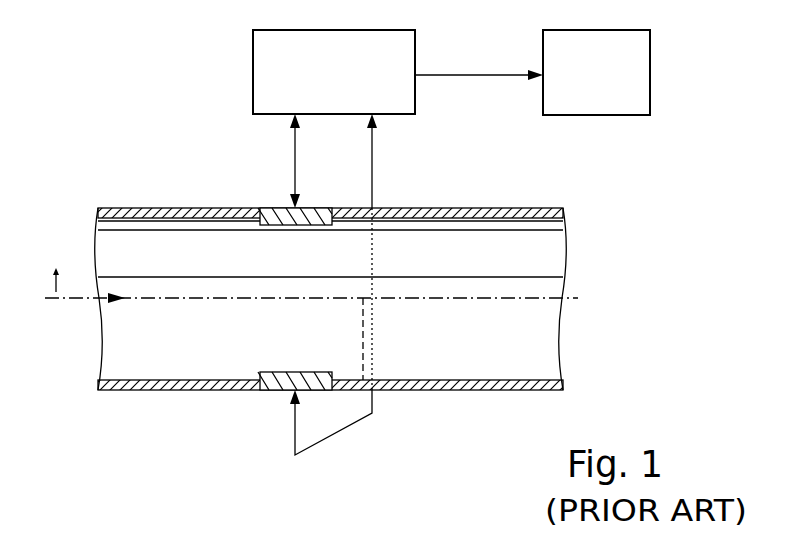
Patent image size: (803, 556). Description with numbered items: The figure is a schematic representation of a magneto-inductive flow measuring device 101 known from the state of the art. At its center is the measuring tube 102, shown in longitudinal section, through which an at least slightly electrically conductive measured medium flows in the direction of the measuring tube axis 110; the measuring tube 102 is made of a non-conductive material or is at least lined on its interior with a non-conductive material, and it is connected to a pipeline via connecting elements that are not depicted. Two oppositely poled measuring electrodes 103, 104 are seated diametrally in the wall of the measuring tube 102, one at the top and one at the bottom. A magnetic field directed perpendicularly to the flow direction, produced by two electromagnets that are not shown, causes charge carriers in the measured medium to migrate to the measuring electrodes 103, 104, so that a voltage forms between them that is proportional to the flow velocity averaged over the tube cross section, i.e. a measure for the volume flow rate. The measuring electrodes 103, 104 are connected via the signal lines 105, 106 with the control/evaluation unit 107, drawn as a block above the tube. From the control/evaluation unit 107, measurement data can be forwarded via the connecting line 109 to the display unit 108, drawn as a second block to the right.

The magneto-inductive flow measuring device 101 is at (334, 366).
The measuring tube 102 is at (482, 390).
The measuring electrode 103 is at (272, 391).
The measuring electrode 104 is at (270, 208).
The signal line 105 is at (374, 158).
The signal line 106 is at (297, 158).
The control/evaluation unit 107 is at (334, 72).
The display unit 108 is at (596, 72).
The connecting line 109 is at (481, 73).
The measuring tube axis 110 is at (334, 268).